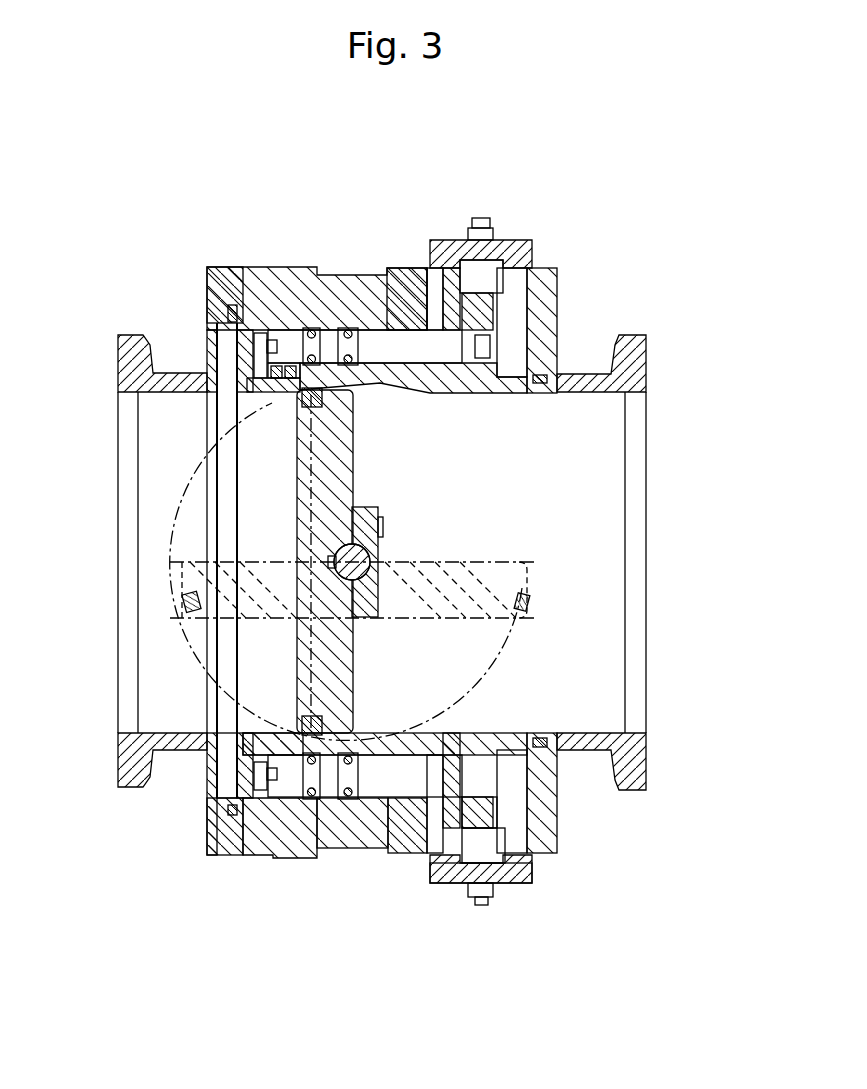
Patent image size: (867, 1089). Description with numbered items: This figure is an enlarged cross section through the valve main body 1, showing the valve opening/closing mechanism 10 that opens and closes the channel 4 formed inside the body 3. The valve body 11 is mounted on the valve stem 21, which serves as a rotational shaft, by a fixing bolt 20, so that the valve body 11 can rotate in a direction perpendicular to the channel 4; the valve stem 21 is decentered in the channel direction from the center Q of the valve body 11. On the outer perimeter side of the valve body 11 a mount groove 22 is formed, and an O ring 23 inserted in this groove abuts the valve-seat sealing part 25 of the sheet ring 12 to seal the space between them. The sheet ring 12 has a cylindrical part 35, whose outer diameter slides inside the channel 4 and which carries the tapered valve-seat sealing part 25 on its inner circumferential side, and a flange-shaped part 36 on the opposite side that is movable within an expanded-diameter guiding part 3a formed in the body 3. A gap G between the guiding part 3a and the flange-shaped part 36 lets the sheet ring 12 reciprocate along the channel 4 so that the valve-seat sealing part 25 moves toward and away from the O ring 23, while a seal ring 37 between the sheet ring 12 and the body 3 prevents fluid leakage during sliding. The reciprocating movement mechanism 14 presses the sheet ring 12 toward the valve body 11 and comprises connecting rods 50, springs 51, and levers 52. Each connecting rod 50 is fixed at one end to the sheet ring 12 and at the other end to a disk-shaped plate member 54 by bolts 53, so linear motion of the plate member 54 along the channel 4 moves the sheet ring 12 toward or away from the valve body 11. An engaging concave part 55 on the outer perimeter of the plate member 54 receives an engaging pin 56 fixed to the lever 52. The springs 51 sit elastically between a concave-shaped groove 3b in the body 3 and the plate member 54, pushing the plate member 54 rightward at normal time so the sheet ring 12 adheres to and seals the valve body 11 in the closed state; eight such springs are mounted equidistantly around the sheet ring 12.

The valve main body 1 is at (350, 852).
The body 3 is at (353, 268).
The guiding part 3a is at (262, 322).
The concave-shaped groove 3b is at (413, 268).
The channel 4 is at (600, 725).
The valve opening/closing mechanism 10 is at (445, 885).
The valve body 11 is at (300, 483).
The sheet ring 12 is at (252, 358).
The reciprocating movement mechanism 14 is at (412, 840).
The fixing bolt 20 is at (378, 520).
The valve stem 21 is at (368, 548).
The mount groove 22 is at (302, 732).
The O ring 23 is at (322, 402).
The valve-seat sealing part 25 is at (300, 400).
The cylindrical part 35 is at (306, 345).
The flange-shaped part 36 is at (252, 782).
The seal ring 37 is at (286, 762).
The connecting rod 50 is at (387, 268).
The spring 51 is at (432, 268).
The lever 52 is at (517, 262).
The bolt 53 is at (233, 340).
The plate member 54 is at (490, 798).
The engaging concave part 55 is at (481, 240).
The engaging pin 56 is at (480, 262).
The gap G is at (245, 803).
The center of the valve body Q is at (325, 645).